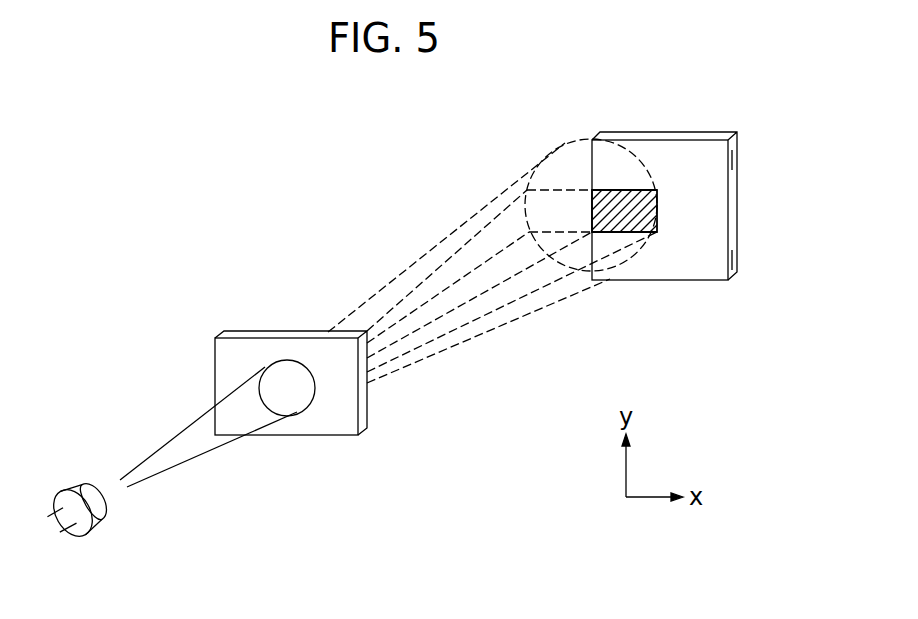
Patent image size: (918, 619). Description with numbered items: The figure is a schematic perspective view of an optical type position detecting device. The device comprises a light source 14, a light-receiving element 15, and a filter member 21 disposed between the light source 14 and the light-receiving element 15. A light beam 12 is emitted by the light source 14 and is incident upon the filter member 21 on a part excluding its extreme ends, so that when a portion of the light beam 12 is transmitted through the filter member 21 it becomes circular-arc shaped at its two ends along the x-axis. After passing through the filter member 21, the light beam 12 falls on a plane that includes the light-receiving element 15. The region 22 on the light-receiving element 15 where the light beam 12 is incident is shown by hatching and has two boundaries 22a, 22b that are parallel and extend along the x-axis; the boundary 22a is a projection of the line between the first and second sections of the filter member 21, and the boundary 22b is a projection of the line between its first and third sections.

The light beam 12 is at (189, 429).
The light source 14 is at (100, 484).
The light-receiving element 15 is at (700, 163).
The filter member 21 is at (228, 356).
The region 22 is at (655, 218).
The boundary 22a is at (617, 190).
The boundary 22b is at (615, 234).